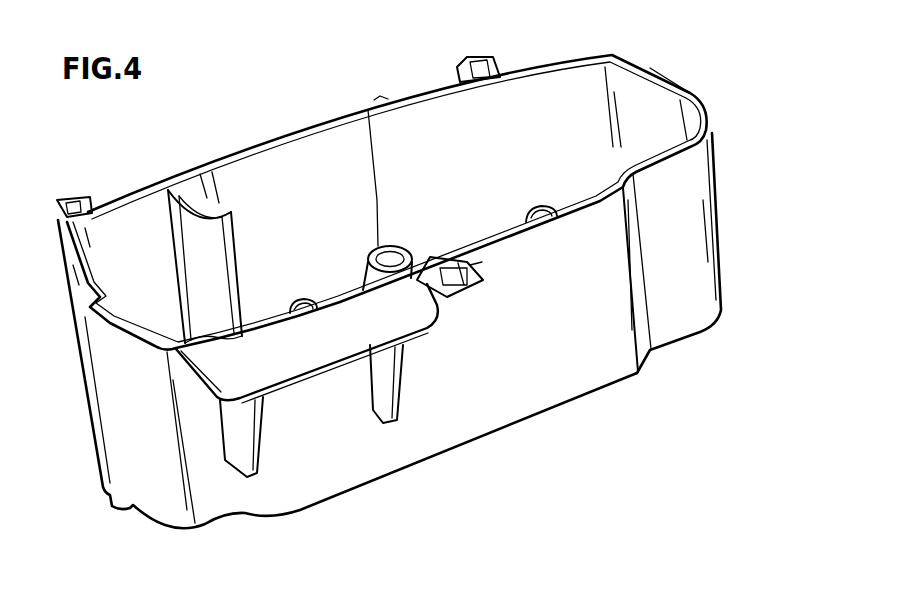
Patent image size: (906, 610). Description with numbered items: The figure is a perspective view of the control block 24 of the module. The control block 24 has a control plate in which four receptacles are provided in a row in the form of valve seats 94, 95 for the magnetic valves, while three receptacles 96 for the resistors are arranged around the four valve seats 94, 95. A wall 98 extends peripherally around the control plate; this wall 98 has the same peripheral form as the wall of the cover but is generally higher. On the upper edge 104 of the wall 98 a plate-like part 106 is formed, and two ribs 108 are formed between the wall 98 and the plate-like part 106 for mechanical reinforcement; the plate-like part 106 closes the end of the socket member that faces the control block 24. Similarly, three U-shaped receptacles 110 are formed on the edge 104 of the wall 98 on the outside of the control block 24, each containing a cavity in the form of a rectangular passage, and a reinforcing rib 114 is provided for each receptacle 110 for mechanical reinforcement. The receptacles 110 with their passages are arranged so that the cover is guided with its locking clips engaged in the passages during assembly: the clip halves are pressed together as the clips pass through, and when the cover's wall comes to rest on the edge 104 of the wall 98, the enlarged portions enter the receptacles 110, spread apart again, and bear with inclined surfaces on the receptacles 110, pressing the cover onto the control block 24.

The control block 24 is at (700, 340).
The valve seat 94 is at (546, 204).
The valve seat 95 is at (300, 300).
The receptacle 96 is at (402, 246).
The wall 98 is at (717, 190).
The upper edge 104 is at (700, 97).
The plate-like part 106 is at (302, 358).
The rib 108 is at (383, 415).
The U-shaped receptacle 110 is at (92, 196).
The reinforcing rib 114 is at (472, 290).